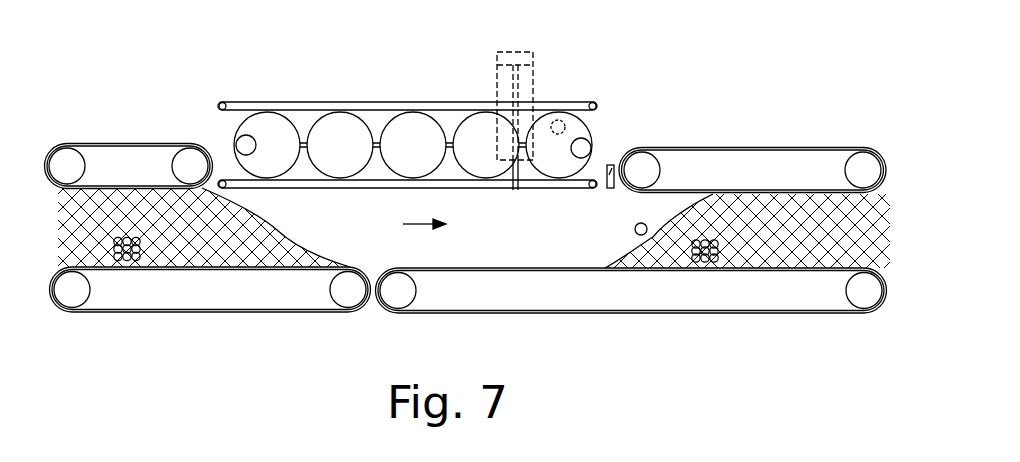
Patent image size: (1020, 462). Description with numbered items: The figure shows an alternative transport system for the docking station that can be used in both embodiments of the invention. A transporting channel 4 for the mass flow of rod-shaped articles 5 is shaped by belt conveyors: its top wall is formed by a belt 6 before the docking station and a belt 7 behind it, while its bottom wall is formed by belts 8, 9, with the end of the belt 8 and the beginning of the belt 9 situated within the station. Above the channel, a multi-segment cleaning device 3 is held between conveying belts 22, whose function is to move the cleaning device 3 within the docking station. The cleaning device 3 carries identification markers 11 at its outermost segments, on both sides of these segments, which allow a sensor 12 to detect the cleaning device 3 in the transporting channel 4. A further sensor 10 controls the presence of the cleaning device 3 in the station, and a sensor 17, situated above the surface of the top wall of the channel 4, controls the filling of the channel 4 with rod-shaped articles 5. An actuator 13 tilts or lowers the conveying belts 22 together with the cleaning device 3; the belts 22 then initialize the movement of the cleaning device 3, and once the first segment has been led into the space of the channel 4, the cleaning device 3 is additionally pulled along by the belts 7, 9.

The multi-segment cleaning device 3 is at (343, 120).
The transporting channel 4 is at (350, 230).
The rod-shaped articles 5 is at (707, 258).
The belt 6 is at (110, 144).
The belt 7 is at (792, 148).
The belt 8 is at (197, 311).
The belt 9 is at (752, 314).
The sensor 10 is at (558, 120).
The identification markers 11 is at (252, 140).
The sensor 12 is at (638, 234).
The actuator 13 is at (502, 80).
The sensor 17 is at (642, 148).
The conveying belts 22 is at (230, 180).